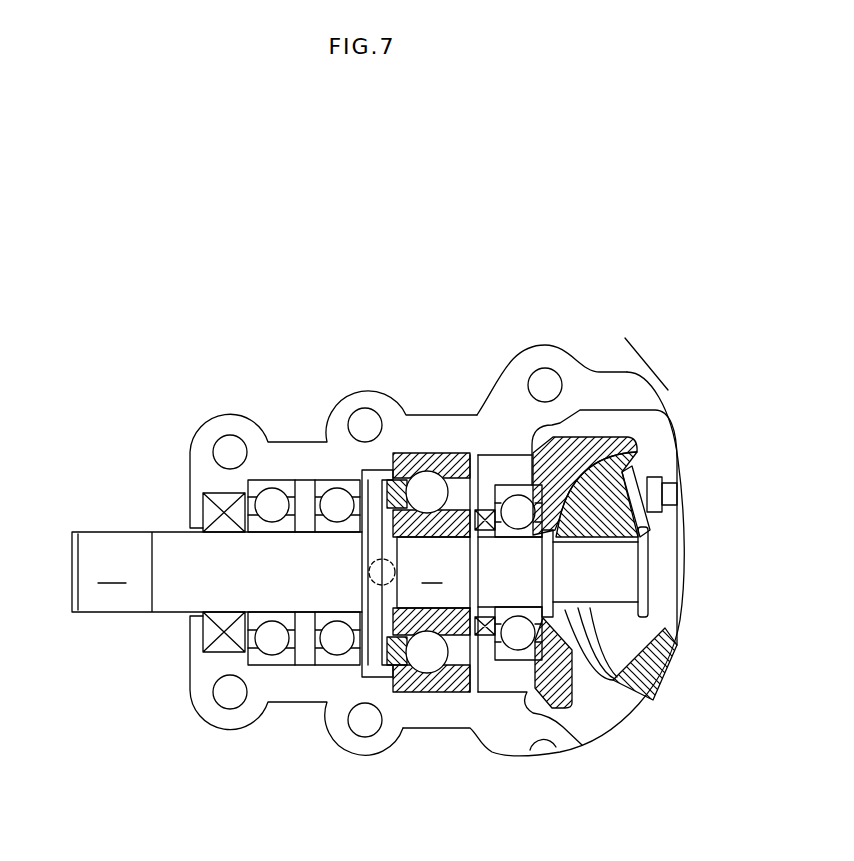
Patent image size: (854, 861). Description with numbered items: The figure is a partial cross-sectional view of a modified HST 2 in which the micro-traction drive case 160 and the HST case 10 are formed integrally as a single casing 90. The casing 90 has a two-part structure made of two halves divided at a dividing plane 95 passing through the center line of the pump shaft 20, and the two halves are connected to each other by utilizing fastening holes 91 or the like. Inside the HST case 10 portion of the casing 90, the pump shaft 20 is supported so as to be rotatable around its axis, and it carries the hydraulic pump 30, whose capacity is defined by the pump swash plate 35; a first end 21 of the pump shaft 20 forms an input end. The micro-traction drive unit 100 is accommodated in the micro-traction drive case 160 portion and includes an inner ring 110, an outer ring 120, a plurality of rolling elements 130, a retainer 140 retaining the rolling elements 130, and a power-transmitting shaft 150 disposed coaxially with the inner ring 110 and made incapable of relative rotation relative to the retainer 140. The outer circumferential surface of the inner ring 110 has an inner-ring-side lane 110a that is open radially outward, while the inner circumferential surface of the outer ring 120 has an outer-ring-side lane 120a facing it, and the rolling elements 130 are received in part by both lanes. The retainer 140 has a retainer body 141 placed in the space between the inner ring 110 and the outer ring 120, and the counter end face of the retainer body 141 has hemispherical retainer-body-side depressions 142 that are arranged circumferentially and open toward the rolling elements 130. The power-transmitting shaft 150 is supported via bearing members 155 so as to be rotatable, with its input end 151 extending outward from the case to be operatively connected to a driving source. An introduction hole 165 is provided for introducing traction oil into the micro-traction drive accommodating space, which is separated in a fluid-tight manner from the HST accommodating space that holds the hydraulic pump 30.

The HST 2 is at (585, 297).
The HST case 10 is at (604, 360).
The pump shaft 20 is at (622, 576).
The first end 21 is at (469, 572).
The hydraulic pump 30 is at (663, 468).
The pump swash plate 35 is at (622, 438).
The casing 90 is at (479, 372).
The fastening holes 91 is at (230, 448).
The dividing plane 95 is at (628, 392).
The micro-traction drive unit 100 is at (316, 380).
The inner ring 110 is at (474, 492).
The inner-ring-side lane 110a is at (450, 530).
The outer ring 120 is at (400, 470).
The outer-ring-side lane 120a is at (440, 452).
The rolling elements 130 is at (439, 566).
The retainer 140 is at (443, 587).
The retainer body 141 is at (402, 692).
The retainer-body-side depressions 142 is at (463, 692).
The power-transmitting shaft 150 is at (217, 605).
The input end 151 is at (112, 570).
The bearing members 155 is at (275, 650).
The micro-traction drive case 160 is at (285, 410).
The introduction hole 165 is at (370, 569).